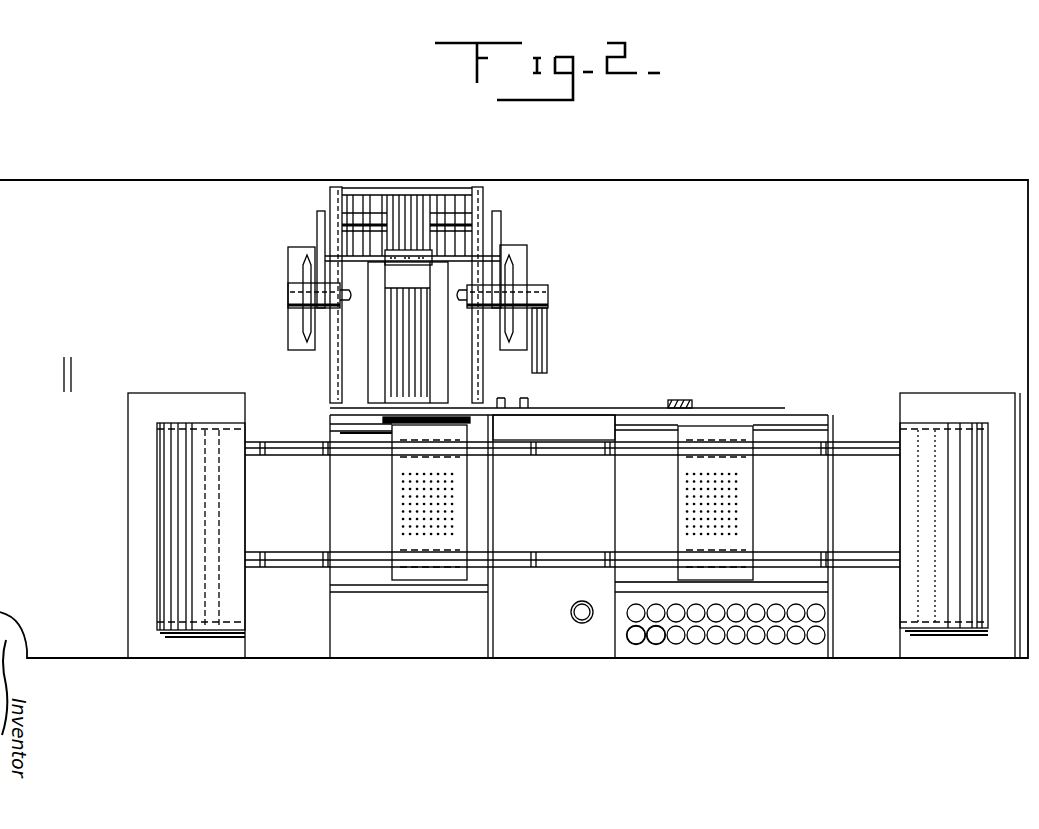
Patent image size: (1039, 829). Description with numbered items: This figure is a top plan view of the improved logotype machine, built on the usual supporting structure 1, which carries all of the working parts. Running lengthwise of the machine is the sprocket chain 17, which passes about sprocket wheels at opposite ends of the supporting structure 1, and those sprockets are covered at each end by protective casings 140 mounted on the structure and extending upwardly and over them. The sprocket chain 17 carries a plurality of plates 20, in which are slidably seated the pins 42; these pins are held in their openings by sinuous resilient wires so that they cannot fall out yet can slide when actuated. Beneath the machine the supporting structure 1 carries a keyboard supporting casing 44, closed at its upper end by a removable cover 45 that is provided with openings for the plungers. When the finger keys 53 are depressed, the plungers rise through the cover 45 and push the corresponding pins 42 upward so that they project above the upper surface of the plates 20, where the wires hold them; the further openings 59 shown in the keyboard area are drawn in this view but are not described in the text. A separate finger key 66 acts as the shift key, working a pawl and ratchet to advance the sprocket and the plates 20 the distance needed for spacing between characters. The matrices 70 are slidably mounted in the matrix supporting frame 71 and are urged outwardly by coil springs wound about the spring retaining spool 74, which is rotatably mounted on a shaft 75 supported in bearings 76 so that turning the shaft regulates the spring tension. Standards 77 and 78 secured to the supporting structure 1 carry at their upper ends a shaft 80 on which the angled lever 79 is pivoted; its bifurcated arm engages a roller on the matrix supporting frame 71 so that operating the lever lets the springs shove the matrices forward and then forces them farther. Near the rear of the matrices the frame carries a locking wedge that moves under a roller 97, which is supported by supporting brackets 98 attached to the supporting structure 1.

The supporting structure 1 is at (514, 419).
The sprocket chain 17 is at (575, 445).
The plates 20 is at (467, 535).
The pins 42 is at (405, 518).
The keyboard supporting casing 44 is at (680, 652).
The removable cover 45 is at (808, 485).
The finger keys 53 is at (795, 640).
The holes 59 is at (655, 642).
The finger key 66 is at (576, 621).
The matrices 70 is at (418, 357).
The matrix supporting frame 71 is at (470, 290).
The spring retaining spool 74 is at (398, 212).
The shaft 75 is at (440, 222).
The bearings 76 is at (460, 222).
The standard 77 is at (518, 257).
The standard 78 is at (295, 258).
The angled lever 79 is at (545, 325).
The shaft 80 is at (337, 292).
The roller 97 is at (340, 435).
The supporting brackets 98 is at (340, 410).
The protective casings 140 is at (160, 543).